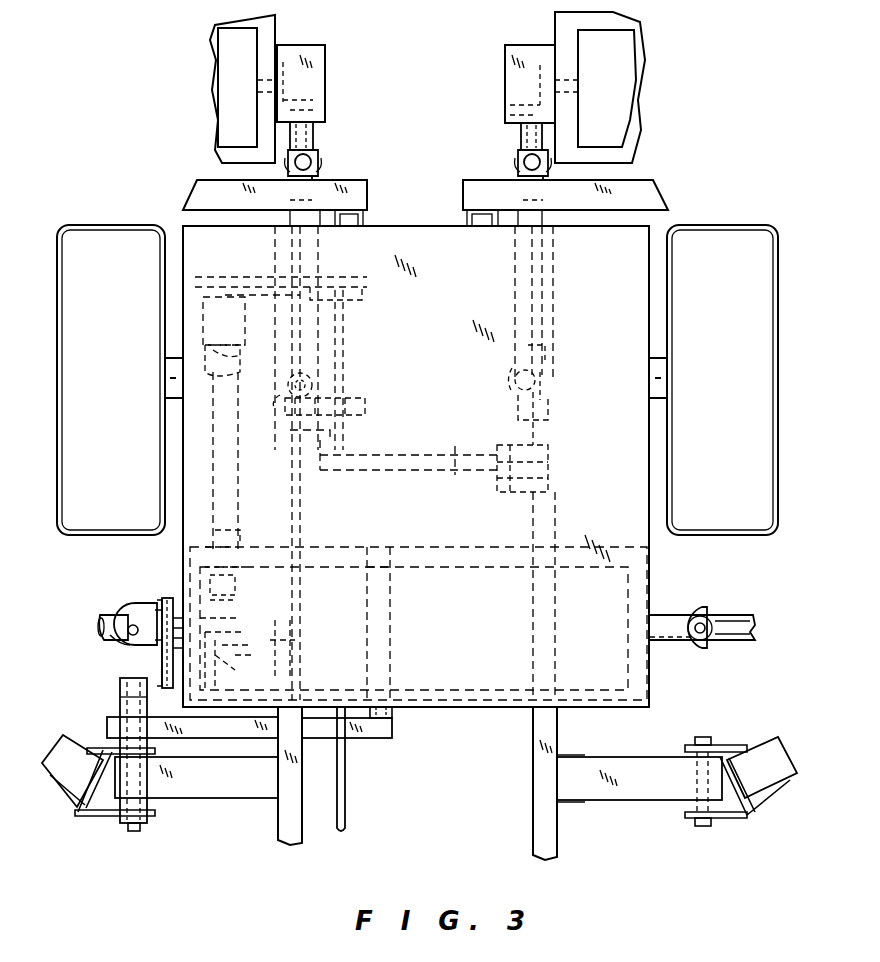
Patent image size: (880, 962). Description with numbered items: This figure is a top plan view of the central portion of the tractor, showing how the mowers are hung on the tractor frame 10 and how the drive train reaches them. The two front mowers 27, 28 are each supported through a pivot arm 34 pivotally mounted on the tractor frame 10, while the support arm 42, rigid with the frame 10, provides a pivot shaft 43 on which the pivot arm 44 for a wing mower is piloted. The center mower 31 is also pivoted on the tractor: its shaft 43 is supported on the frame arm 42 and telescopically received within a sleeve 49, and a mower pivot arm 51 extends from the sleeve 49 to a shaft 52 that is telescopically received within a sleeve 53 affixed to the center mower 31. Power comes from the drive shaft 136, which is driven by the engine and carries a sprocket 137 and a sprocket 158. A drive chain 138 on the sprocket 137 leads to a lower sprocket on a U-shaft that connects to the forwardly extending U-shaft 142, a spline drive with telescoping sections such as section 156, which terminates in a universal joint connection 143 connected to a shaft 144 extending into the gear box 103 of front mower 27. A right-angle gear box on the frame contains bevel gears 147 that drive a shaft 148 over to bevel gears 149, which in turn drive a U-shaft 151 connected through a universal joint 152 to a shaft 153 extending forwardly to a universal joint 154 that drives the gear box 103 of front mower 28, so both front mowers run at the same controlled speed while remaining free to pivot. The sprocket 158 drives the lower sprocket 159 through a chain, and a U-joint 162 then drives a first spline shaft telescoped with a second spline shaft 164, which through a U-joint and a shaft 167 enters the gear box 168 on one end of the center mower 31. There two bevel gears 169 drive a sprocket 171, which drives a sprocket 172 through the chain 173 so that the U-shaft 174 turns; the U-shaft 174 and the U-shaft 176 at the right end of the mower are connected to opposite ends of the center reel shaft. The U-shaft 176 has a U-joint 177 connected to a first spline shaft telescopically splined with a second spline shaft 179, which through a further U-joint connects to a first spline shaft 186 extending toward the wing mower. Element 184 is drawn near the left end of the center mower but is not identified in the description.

The tractor frame 10 is at (533, 840).
The front mower 27 is at (265, 25).
The front mower 28 is at (620, 20).
The center mower 31 is at (648, 668).
The pivot arm 34 is at (362, 190).
The support arm 42 is at (207, 790).
The pivot shaft 43 is at (133, 831).
The pivot arm 44 is at (75, 812).
The sleeve 49 is at (118, 705).
The mower pivot arm 51 is at (372, 738).
The shaft 52 is at (392, 712).
The sleeve 53 is at (390, 662).
The gear box 103 is at (325, 63).
The drive shaft 136 is at (345, 812).
The sprocket 137 is at (360, 400).
The drive chain 138 is at (273, 405).
The U-shaft 142 is at (318, 260).
The universal joint connection 143 is at (320, 160).
The shaft 144 is at (313, 125).
The bevel gears 147 is at (350, 455).
The shaft 148 is at (458, 452).
The bevel gears 149 is at (550, 468).
The U-shaft 151 is at (560, 400).
The universal joint 152 is at (560, 378).
The shaft 153 is at (556, 345).
The universal joint 154 is at (521, 154).
The telescoping section 156 is at (290, 213).
The sprocket 158 is at (362, 290).
The lower sprocket 159 is at (240, 321).
The U-joint 162 is at (241, 437).
The second spline shaft 164 is at (232, 535).
The shaft 167 is at (239, 588).
The gear box 168 is at (290, 652).
The bevel gears 169 is at (215, 662).
The sprocket 171 is at (162, 666).
The sprocket 172 is at (156, 620).
The chain 173 is at (170, 583).
The U-shaft 174 is at (132, 612).
The U-shaft 176 is at (665, 615).
The U-joint 177 is at (706, 626).
The second spline shaft 179 is at (732, 637).
The pin 184 is at (122, 640).
The first spline shaft 186 is at (104, 635).